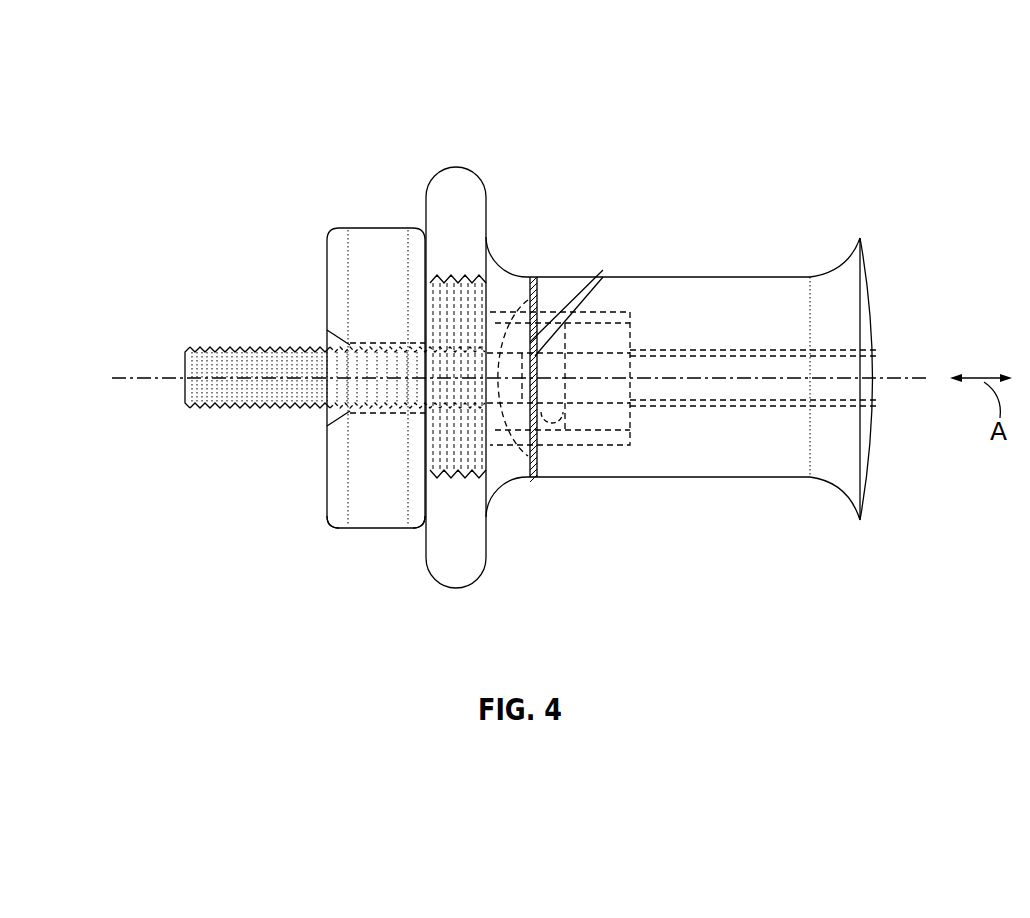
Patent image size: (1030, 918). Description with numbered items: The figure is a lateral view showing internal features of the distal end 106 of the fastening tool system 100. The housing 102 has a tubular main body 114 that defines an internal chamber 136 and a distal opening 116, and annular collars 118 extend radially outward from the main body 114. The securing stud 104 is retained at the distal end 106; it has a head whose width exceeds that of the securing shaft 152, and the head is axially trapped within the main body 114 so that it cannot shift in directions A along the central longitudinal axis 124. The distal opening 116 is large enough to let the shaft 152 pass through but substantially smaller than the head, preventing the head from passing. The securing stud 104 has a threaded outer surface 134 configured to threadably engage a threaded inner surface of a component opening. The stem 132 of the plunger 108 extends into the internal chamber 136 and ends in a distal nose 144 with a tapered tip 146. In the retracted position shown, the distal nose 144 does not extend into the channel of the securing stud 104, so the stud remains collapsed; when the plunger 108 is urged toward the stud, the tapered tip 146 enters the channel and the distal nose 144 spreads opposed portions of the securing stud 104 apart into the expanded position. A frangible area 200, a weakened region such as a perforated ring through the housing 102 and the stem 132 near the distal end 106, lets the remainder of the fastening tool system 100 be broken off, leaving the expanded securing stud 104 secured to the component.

The fastening tool system 100 is at (256, 112).
The housing 102 is at (704, 380).
The securing stud 104 is at (314, 376).
The distal end 106 is at (358, 380).
The plunger 108 is at (724, 392).
The main body 114 is at (366, 548).
The distal opening 116 is at (325, 410).
The annular collars 118 is at (456, 589).
The central longitudinal axis 124 is at (141, 380).
The stem 132 is at (650, 372).
The threaded outer surface 134 is at (208, 410).
The internal chamber 136 is at (748, 340).
The distal nose 144 is at (540, 280).
The tapered tip 146 is at (535, 442).
The securing shaft 152 is at (216, 346).
The frangible area 200 is at (592, 298).